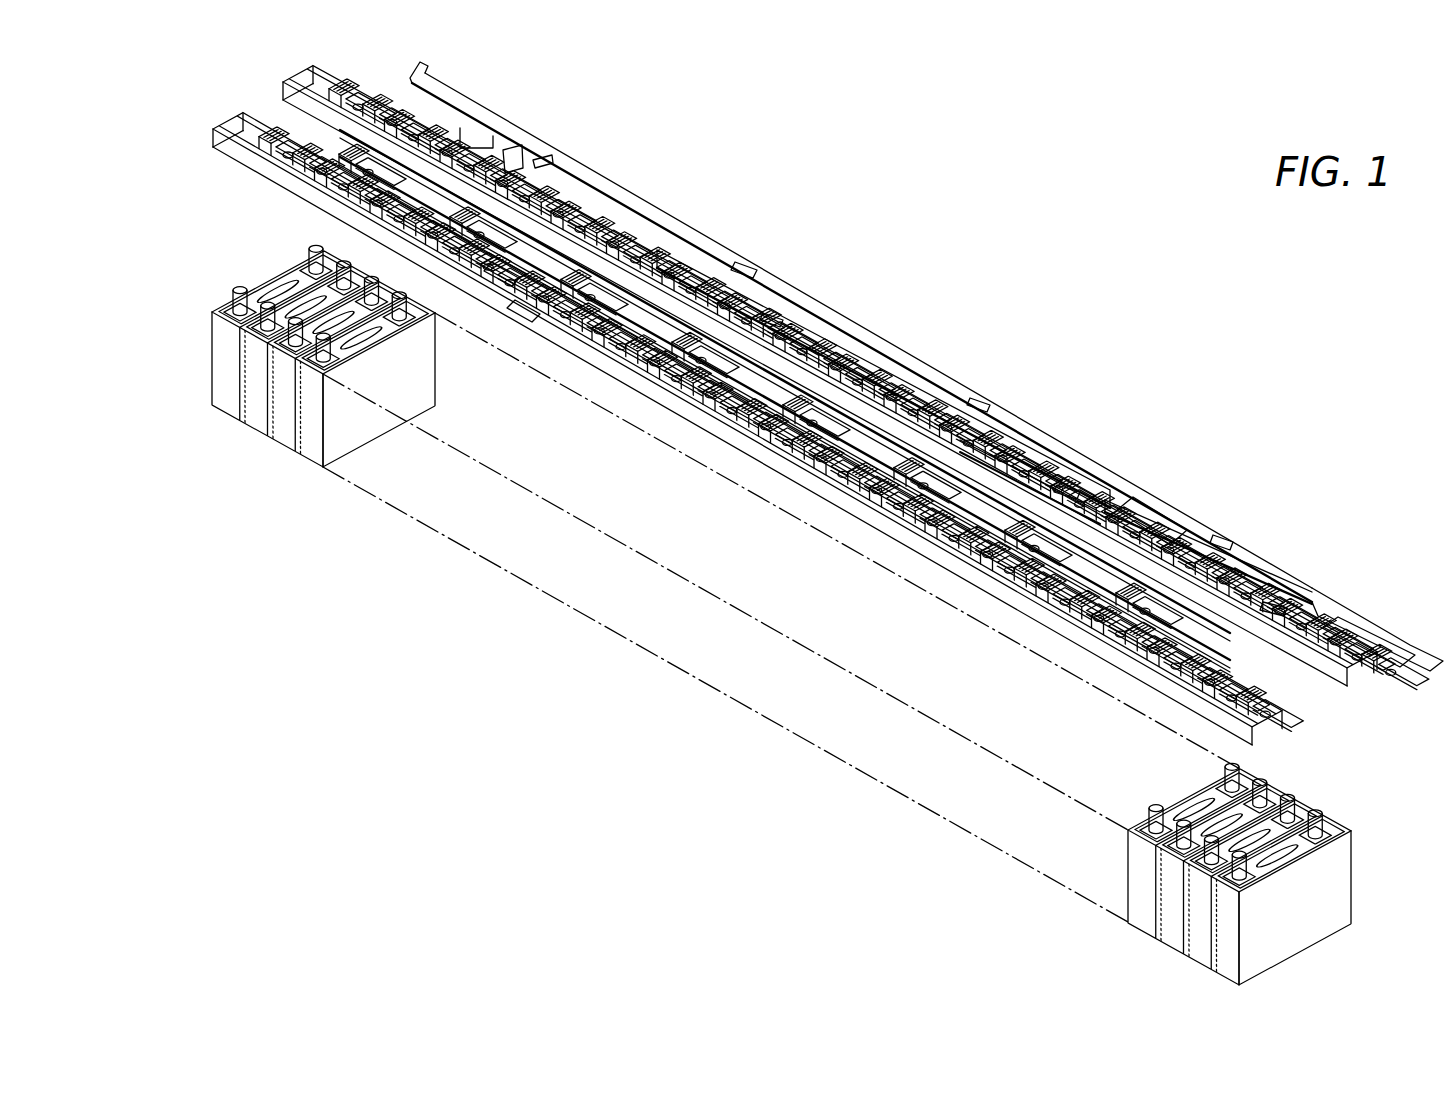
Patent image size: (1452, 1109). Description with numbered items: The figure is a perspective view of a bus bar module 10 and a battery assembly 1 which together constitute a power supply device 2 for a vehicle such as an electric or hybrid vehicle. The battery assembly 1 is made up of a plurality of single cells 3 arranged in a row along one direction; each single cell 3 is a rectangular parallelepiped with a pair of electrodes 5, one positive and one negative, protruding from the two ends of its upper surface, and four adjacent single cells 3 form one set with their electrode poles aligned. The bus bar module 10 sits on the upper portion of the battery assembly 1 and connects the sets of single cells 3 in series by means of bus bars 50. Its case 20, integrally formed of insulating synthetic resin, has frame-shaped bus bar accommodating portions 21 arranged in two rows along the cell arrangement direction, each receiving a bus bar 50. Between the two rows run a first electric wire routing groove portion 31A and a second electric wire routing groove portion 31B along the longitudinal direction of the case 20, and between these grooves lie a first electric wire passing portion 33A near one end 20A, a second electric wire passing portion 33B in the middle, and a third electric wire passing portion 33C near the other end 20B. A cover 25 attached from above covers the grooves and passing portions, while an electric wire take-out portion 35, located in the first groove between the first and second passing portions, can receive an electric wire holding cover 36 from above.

The battery assembly 1 is at (745, 705).
The power supply device 2 is at (759, 596).
The single cell 3 is at (220, 392).
The electrode 5 is at (316, 248).
The bus bar module 10 is at (779, 419).
The case 20 is at (772, 417).
The one end of the case 20A is at (243, 100).
The another end of the case 20B is at (1290, 717).
The bus bar accommodating portion 21 is at (224, 157).
The cover 25 is at (1077, 460).
The first electric wire routing groove portion 31A is at (688, 370).
The second electric wire routing groove portion 31B is at (723, 357).
The first electric wire passing portion 33A is at (462, 138).
The second electric wire passing portion 33B is at (993, 473).
The third electric wire passing portion 33C is at (1222, 622).
The electric wire take-out portion 35 is at (522, 312).
The electric wire holding cover 36 is at (500, 265).
The bus bar 50 is at (292, 185).